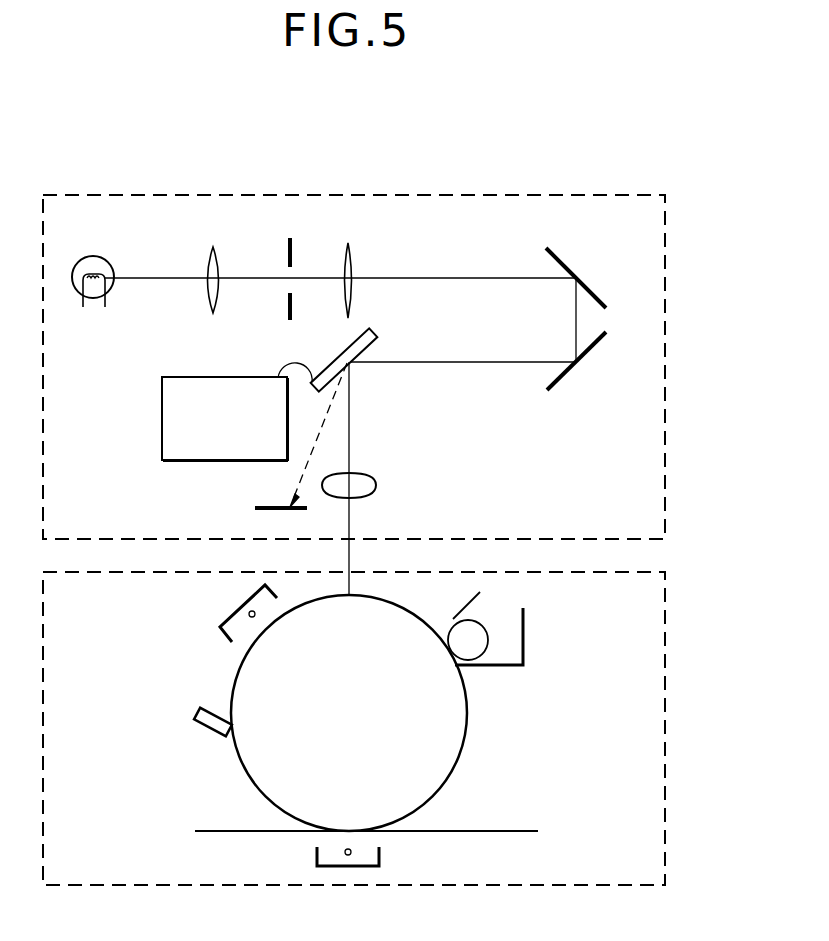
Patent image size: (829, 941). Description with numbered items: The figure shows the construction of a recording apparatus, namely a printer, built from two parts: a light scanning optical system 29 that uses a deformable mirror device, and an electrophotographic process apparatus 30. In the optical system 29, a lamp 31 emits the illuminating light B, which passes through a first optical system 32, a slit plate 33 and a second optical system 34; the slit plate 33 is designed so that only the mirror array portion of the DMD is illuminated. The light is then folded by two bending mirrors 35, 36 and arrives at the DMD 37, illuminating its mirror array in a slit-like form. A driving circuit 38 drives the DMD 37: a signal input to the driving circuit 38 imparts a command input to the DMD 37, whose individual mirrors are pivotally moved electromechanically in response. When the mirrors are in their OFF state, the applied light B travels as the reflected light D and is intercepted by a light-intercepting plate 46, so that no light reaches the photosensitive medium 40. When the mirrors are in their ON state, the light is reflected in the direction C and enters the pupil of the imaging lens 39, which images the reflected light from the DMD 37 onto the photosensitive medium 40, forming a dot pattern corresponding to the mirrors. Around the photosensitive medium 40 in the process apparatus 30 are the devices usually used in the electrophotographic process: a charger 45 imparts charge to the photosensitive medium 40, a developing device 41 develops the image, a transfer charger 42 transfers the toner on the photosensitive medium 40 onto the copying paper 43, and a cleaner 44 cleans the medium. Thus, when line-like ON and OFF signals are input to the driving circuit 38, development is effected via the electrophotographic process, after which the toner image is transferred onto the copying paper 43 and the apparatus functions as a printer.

The light scanning optical system 29 is at (665, 266).
The electrophotographic process apparatus 30 is at (666, 648).
The lamp 31 is at (112, 266).
The optical system 32 is at (220, 260).
The slit plate 33 is at (293, 246).
The optical system 34 is at (353, 272).
The bending mirror 35 is at (572, 268).
The bending mirror 36 is at (590, 346).
The DMD 37 is at (374, 334).
The driving circuit 38 is at (234, 377).
The imaging lens 39 is at (377, 486).
The photosensitive medium 40 is at (466, 735).
The developing device 41 is at (509, 641).
The transfer charger 42 is at (383, 857).
The copying paper 43 is at (514, 831).
The cleaner 44 is at (205, 732).
The charger 45 is at (225, 611).
The light-intercepting plate 46 is at (272, 506).
The light of the illuminating system B is at (472, 360).
The direction of reflected light in ON state C is at (351, 418).
The reflected light in OFF state D is at (313, 454).